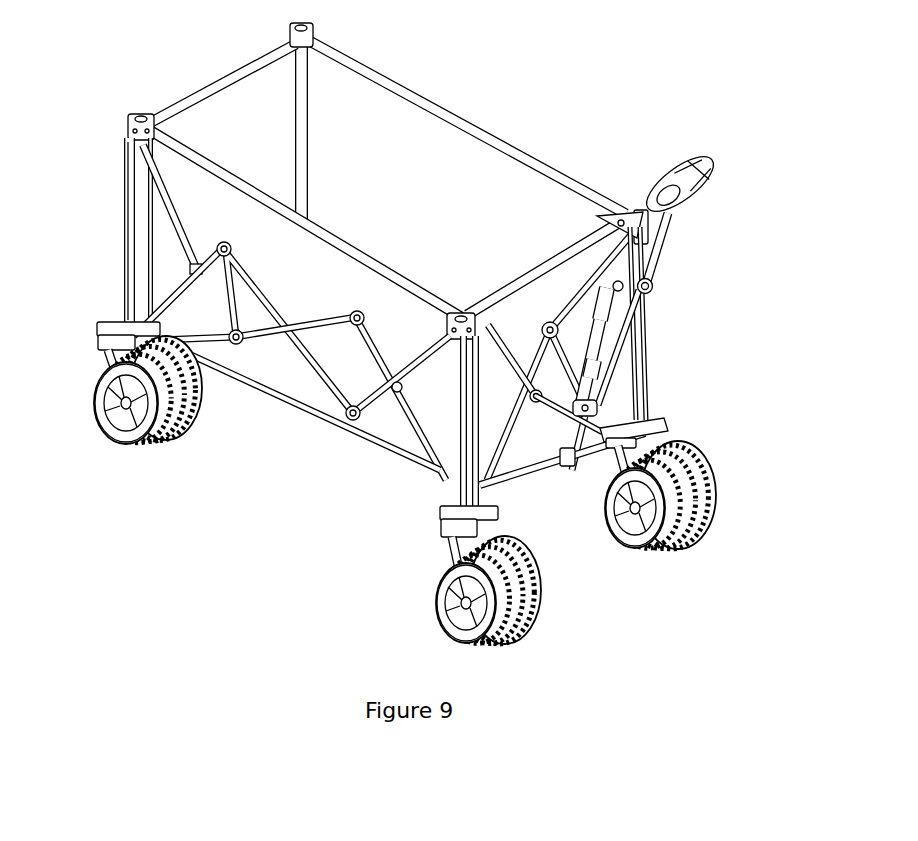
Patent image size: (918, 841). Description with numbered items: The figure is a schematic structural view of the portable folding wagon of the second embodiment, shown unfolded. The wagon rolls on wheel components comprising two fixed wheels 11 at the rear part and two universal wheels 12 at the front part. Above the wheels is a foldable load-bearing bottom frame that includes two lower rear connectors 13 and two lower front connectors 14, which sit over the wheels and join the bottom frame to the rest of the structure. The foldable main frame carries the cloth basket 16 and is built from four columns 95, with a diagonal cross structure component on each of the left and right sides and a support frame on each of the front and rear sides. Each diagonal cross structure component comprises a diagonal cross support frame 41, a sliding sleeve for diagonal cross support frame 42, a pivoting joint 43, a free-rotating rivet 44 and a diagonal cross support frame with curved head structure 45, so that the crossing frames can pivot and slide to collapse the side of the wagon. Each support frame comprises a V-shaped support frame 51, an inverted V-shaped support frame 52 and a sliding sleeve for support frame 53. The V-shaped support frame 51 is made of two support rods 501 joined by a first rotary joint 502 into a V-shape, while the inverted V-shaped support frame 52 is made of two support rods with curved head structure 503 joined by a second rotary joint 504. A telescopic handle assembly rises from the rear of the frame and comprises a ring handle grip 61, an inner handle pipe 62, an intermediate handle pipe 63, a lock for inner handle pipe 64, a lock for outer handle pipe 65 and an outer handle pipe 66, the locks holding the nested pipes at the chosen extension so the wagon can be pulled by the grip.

The cloth basket 16 is at (248, 116).
The diagonal cross support frame 41 is at (156, 196).
The column 95 is at (126, 237).
The lower rear connector 13 is at (117, 334).
The fixed wheel 11 is at (112, 412).
The free-rotating rivet 44 is at (284, 341).
The pivoting joint 43 is at (352, 332).
The sliding sleeve for diagonal cross support frame 42 is at (382, 408).
The diagonal cross support frame with curved head structure 45 is at (426, 468).
The lower front connector 14 is at (452, 531).
The universal wheel 12 is at (470, 621).
The second rotary joint 504 is at (546, 326).
The inverted V-shaped support frame 52 is at (567, 326).
The ring handle grip 61 is at (694, 194).
The inner handle pipe 62 is at (660, 258).
The lock for inner handle pipe 64 is at (654, 290).
The support rod 501 is at (610, 315).
The V-shaped support frame 51 is at (605, 338).
The intermediate handle pipe 63 is at (620, 363).
The sliding sleeve for support frame 53 is at (594, 373).
The lock for outer handle pipe 65 is at (622, 421).
The outer handle pipe 66 is at (656, 445).
The support rod with curved head structure 503 is at (513, 447).
The first rotary joint 502 is at (601, 438).